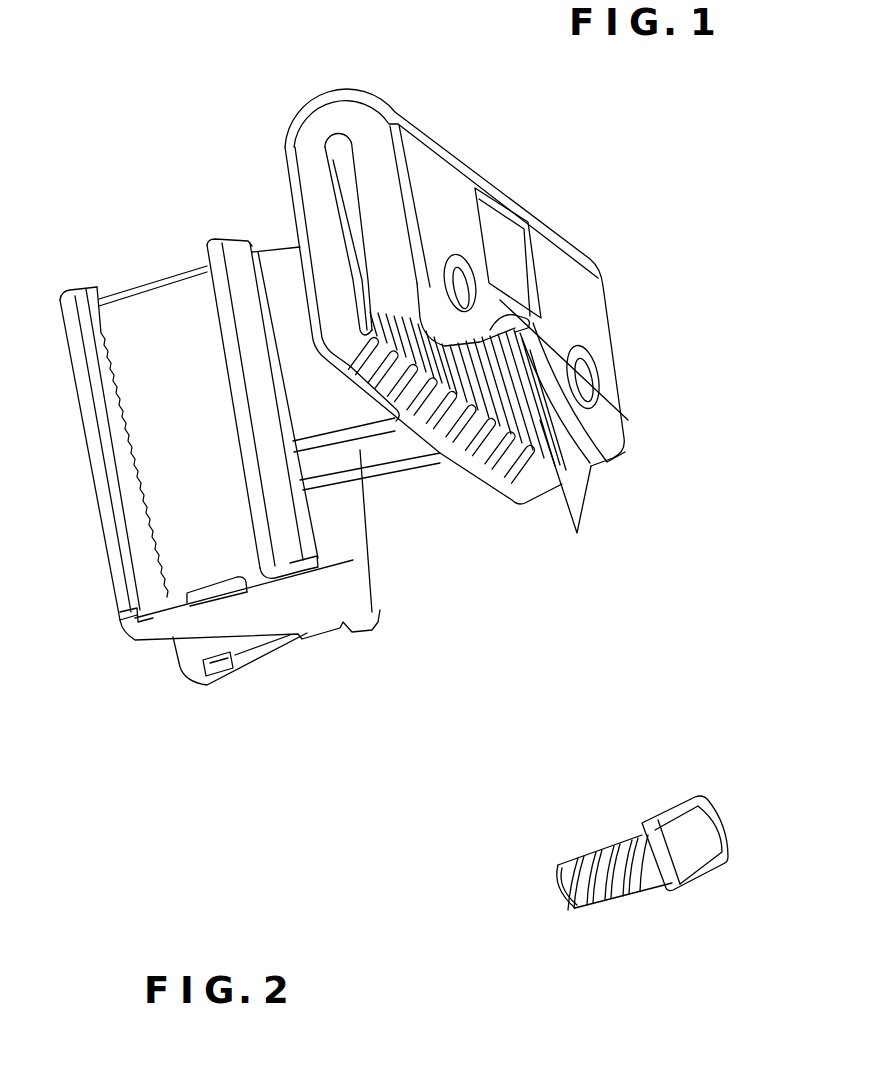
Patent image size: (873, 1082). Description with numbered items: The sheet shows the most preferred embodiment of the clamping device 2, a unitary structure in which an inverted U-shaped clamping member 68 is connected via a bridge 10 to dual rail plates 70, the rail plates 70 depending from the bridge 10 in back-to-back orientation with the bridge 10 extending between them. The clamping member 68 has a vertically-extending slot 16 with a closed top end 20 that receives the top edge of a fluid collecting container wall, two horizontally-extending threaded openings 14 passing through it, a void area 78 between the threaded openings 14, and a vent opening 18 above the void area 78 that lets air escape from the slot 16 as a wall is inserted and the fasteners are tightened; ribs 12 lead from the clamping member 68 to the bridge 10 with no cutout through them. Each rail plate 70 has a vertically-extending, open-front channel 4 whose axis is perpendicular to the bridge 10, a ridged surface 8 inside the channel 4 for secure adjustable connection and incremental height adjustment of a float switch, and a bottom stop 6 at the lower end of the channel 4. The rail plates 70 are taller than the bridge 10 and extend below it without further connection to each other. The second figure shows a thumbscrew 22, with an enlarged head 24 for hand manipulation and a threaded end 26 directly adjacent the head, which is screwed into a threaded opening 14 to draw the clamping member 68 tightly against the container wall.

In FIG. 1, the clamping device 2 is at (168, 60).
In FIG. 1, the vertically-extending channel 4 is at (150, 290).
In FIG. 1, the bottom stop 6 is at (258, 655).
In FIG. 1, the ridged surface 8 is at (156, 490).
In FIG. 1, the bridge 10 is at (336, 396).
In FIG. 1, the ribs 12 is at (567, 482).
In FIG. 1, the threaded openings 14 is at (592, 371).
In FIG. 1, the slot 16 is at (360, 258).
In FIG. 1, the vent opening 18 is at (495, 243).
In FIG. 1, the closed top end 20 is at (412, 80).
In FIG. 2, the thumbscrew 22 is at (722, 968).
In FIG. 2, the enlarged head 24 is at (708, 830).
In FIG. 2, the threaded end 26 is at (612, 858).
In FIG. 1, the clamping member 68 is at (575, 285).
In FIG. 1, the rail plates 70 is at (150, 620).
In FIG. 1, the void area 78 is at (522, 346).